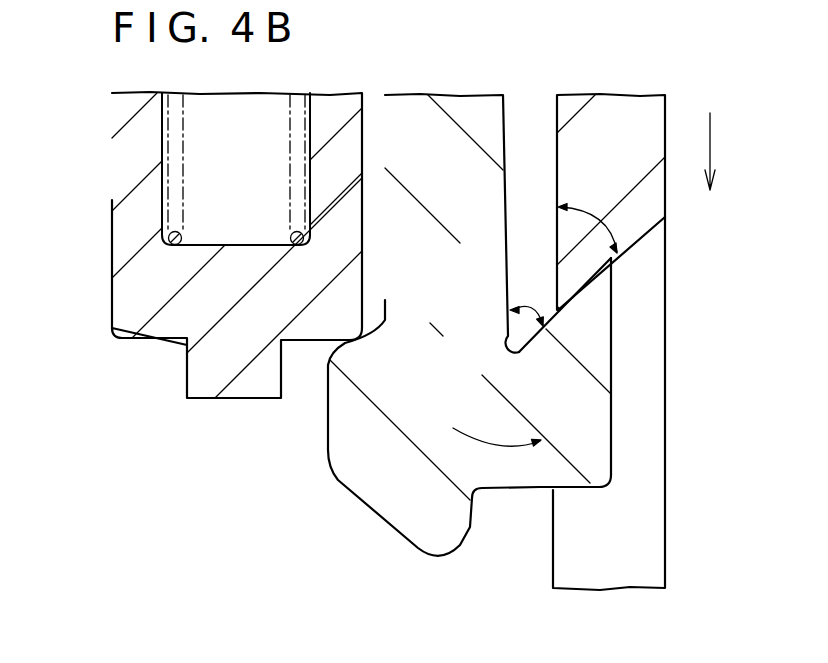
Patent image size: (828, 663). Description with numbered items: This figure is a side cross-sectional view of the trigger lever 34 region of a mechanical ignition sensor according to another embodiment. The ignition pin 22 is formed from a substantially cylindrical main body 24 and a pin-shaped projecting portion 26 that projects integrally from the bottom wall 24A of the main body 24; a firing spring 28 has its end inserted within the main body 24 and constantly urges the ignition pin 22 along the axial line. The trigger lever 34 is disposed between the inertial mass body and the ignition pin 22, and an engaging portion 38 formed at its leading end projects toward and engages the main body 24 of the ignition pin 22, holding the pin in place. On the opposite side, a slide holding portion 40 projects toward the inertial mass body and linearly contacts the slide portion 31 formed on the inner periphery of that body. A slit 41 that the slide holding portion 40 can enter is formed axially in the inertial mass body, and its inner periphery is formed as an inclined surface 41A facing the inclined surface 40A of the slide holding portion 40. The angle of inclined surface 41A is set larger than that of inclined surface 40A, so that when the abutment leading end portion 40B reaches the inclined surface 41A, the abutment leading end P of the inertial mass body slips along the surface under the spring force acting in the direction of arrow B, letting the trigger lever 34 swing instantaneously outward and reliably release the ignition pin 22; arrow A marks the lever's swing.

The ignition pin 22 is at (97, 375).
The main body 24 is at (160, 340).
The bottom wall 24A is at (142, 282).
The projecting portion 26 is at (207, 377).
The firing spring 28 is at (174, 160).
The slide portion 31 is at (553, 253).
The trigger lever 34 is at (505, 492).
The engaging portion 38 is at (343, 430).
The slide holding portion 40 is at (597, 380).
The inclined surface 40A is at (512, 333).
The abutment leading end portion 40B is at (610, 260).
The slit 41 is at (630, 535).
The inclined surface 41A is at (640, 232).
The direction of movement A is at (495, 447).
The arrow B is at (712, 142).
The abutment leading end P is at (553, 298).